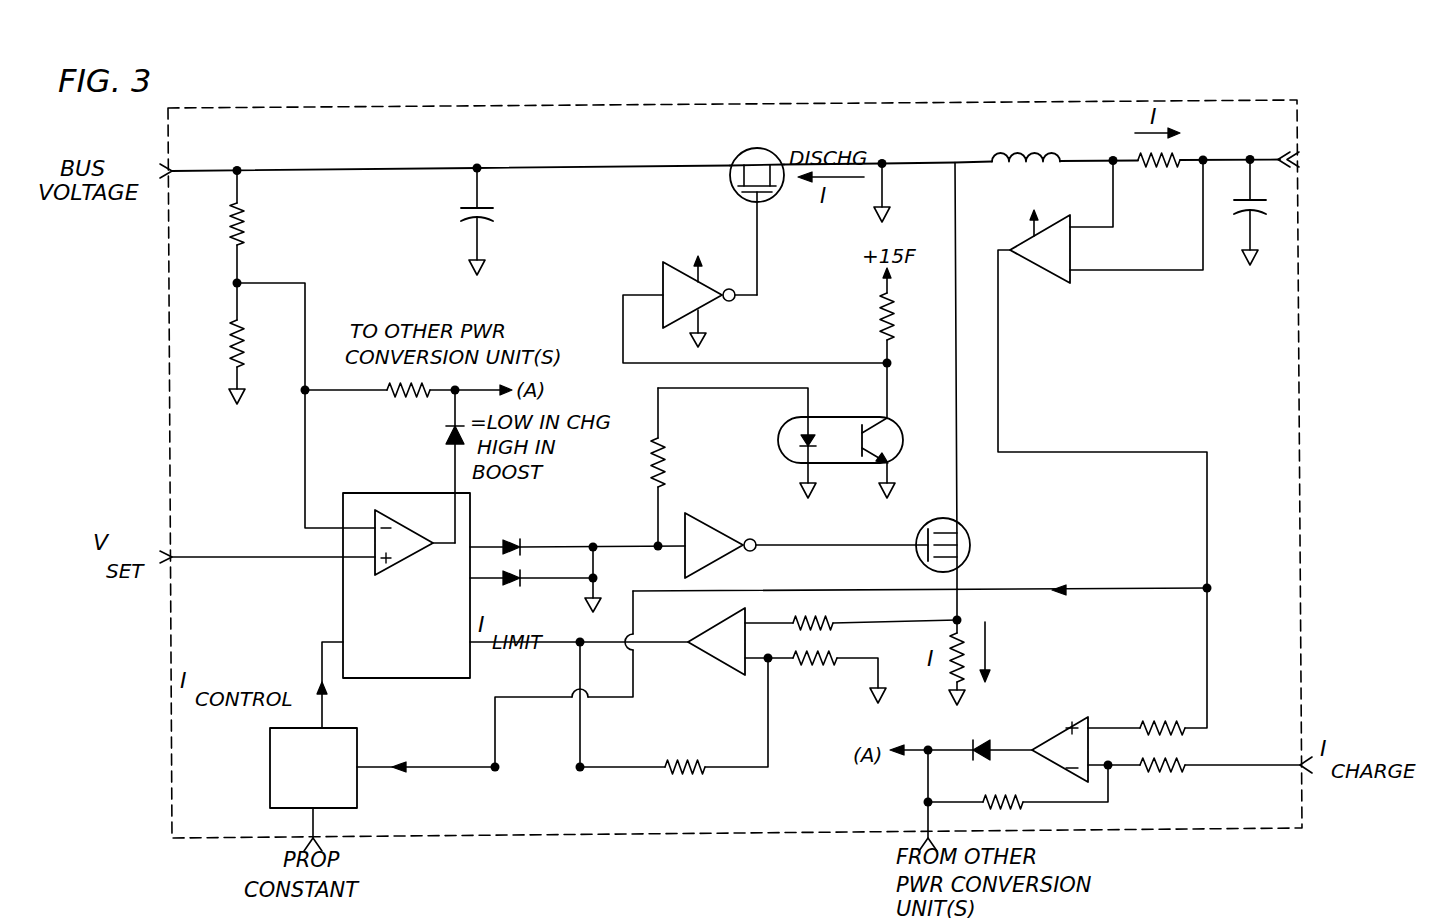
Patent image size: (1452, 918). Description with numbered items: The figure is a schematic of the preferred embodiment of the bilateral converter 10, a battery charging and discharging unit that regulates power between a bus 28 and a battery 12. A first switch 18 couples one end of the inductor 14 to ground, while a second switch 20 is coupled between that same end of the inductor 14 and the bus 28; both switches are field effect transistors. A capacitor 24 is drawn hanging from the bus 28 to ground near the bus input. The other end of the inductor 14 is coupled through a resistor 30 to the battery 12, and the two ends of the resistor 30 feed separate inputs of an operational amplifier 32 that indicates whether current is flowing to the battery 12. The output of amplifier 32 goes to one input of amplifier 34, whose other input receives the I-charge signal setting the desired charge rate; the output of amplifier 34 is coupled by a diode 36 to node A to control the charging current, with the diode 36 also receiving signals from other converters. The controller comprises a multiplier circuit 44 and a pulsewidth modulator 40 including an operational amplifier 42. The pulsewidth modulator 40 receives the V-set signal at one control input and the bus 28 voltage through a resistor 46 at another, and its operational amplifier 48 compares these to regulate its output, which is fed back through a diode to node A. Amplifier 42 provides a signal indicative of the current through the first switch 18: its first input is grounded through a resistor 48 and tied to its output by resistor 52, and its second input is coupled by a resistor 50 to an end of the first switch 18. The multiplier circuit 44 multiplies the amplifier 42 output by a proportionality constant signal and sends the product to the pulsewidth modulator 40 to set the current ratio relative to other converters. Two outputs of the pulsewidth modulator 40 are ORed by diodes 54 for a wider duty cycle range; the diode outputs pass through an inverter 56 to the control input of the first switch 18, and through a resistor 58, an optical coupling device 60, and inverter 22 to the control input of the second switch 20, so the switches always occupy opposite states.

The bilateral converter 10 is at (684, 88).
The battery 12 is at (1349, 140).
The inductor 14 is at (1017, 146).
The first switch 18 is at (963, 531).
The second switch 20 is at (732, 160).
The inverter 22 is at (722, 304).
The bus capacitor 24 is at (500, 213).
The bus 28 is at (540, 166).
The resistor 30 is at (1135, 155).
The operational amplifier 32 is at (1046, 276).
The amplifier 34 is at (1058, 724).
The diode 36 is at (984, 742).
The pulsewidth modulator 40 is at (343, 603).
The operational amplifier 42 is at (718, 668).
The multiplier circuit 44 is at (360, 740).
The resistor 46 is at (250, 226).
The operational amplifier 48 is at (405, 524).
The resistor 50 is at (832, 620).
The resistor 52 is at (680, 778).
The diodes 54 is at (524, 572).
The inverter 56 is at (708, 528).
The resistor 58 is at (672, 456).
The optical coupling device 60 is at (830, 418).